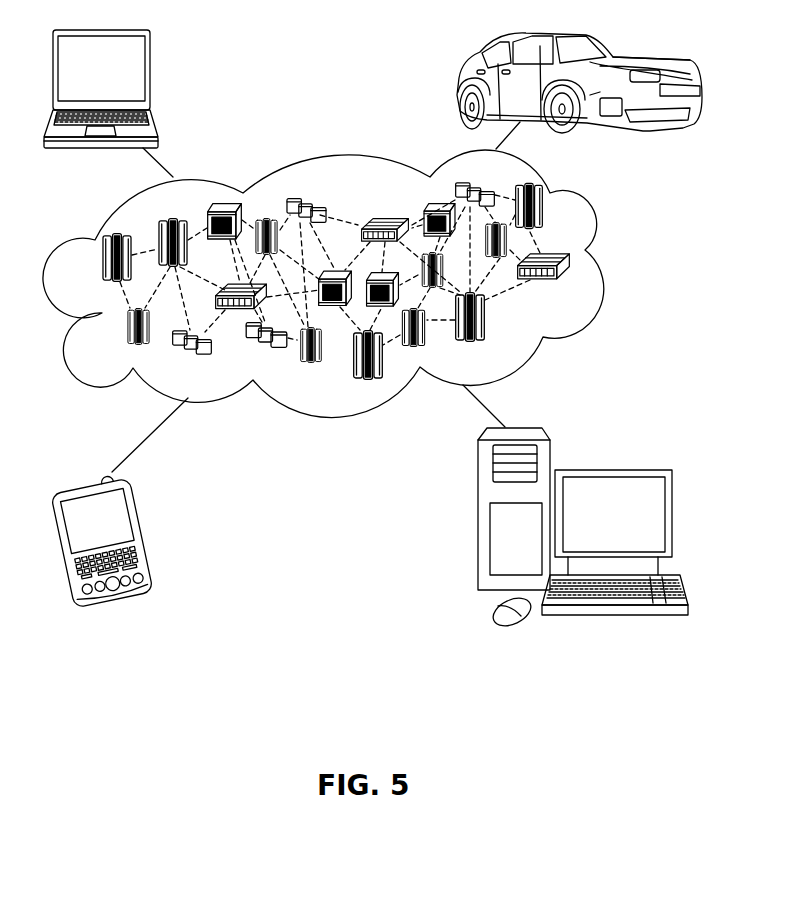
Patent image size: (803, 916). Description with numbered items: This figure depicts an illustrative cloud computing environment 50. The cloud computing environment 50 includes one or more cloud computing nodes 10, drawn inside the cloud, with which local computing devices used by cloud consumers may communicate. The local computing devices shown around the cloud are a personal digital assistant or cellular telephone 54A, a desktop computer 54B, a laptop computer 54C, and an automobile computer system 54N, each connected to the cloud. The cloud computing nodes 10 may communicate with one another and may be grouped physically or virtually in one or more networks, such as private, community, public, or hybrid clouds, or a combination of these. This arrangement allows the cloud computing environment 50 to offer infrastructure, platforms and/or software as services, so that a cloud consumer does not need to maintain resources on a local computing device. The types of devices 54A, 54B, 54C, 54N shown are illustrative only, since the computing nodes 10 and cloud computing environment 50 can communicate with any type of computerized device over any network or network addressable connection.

The cloud computing environment 50 is at (613, 267).
The cloud computing nodes 10 is at (582, 293).
The personal digital assistant or cellular telephone 54A is at (143, 535).
The desktop computer 54B is at (622, 453).
The laptop computer 54C is at (150, 72).
The automobile computer system 54N is at (459, 85).